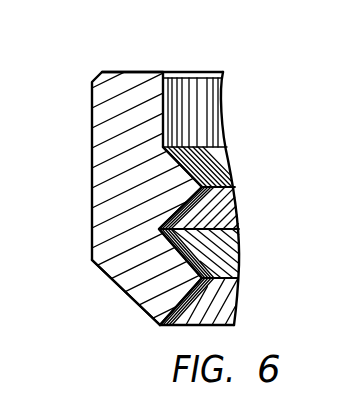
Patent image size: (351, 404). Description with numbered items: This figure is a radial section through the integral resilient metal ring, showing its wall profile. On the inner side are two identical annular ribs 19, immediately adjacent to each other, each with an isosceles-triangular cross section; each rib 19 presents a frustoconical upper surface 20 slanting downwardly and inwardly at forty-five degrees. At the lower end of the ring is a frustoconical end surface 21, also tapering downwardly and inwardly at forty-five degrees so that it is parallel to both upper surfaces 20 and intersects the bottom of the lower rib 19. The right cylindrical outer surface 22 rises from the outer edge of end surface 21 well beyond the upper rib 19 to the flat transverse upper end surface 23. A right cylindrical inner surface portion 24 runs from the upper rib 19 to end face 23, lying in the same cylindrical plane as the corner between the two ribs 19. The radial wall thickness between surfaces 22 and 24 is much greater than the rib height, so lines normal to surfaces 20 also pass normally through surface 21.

The annular ribs 19 is at (185, 192).
The frustoconical upper surface 20 is at (236, 250).
The frustoconical end surface 21 is at (130, 293).
The outer surface 22 is at (92, 135).
The upper end surface 23 is at (122, 72).
The right cylindrical inner surface portion 24 is at (208, 123).